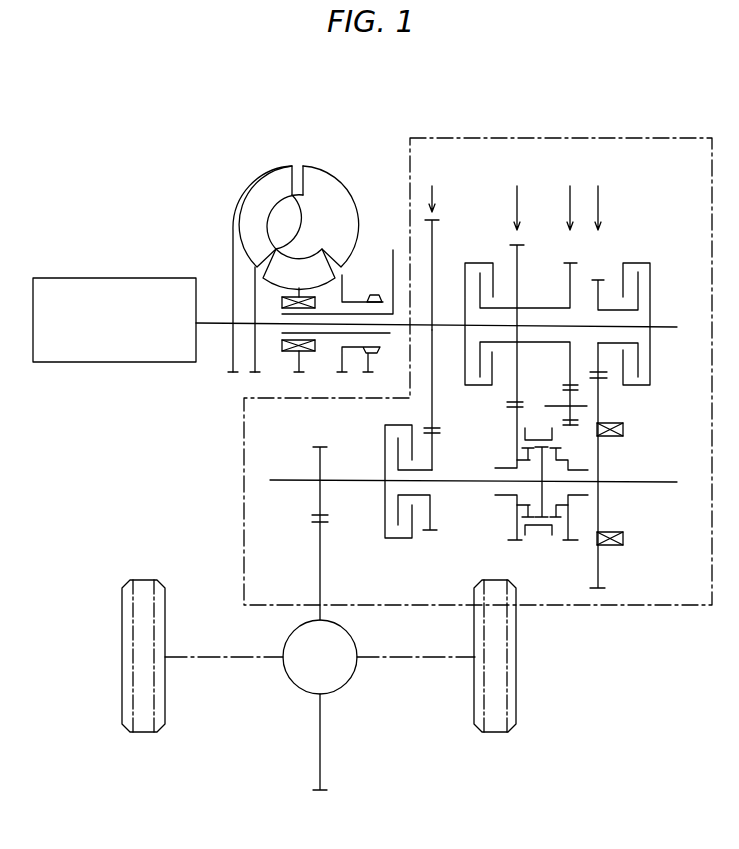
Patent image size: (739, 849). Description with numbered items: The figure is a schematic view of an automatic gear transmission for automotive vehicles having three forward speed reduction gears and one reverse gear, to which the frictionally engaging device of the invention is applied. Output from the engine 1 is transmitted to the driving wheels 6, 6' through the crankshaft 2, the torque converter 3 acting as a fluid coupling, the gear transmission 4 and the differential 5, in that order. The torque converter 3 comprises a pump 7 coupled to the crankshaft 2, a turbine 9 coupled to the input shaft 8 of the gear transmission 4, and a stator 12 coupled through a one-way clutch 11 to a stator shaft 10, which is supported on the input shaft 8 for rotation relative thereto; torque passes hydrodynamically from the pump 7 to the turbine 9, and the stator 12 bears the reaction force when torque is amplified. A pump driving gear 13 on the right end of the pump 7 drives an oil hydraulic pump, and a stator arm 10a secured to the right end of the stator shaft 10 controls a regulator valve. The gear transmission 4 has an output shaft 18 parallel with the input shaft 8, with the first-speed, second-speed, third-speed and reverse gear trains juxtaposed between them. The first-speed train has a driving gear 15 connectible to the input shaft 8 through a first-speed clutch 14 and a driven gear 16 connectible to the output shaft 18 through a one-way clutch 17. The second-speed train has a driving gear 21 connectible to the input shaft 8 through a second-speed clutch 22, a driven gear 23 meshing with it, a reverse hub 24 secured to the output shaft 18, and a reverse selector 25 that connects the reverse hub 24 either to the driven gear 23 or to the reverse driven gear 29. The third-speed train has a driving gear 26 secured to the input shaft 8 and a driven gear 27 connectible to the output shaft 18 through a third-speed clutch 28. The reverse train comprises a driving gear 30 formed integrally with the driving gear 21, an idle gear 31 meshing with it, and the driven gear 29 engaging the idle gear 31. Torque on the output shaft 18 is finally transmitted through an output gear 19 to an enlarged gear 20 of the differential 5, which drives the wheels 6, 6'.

The engine 1 is at (118, 278).
The crankshaft 2 is at (205, 322).
The torque converter 3 is at (324, 178).
The gear transmission 4 is at (456, 138).
The differential 5 is at (288, 677).
The driving wheel 6 is at (143, 689).
The driving wheel 6' is at (495, 690).
The pump 7 is at (346, 212).
The input shaft 8 is at (434, 331).
The turbine 9 is at (258, 208).
The stator shaft 10 is at (382, 335).
The stator arm 10a is at (393, 250).
The one-way clutch 11 is at (279, 352).
The stator 12 is at (344, 284).
The pump driving gear 13 is at (368, 355).
The first-speed clutch 14 is at (651, 278).
The driving gear 15 is at (613, 278).
The driven gear 16 is at (599, 562).
The one-way clutch 17 is at (623, 430).
The output shaft 18 is at (290, 480).
The output gear 19 is at (318, 513).
The enlarged gear 20 is at (320, 576).
The driving gear 21 is at (518, 273).
The second-speed clutch 22 is at (474, 263).
The driven gear 23 is at (517, 449).
The reverse hub 24 is at (540, 488).
The reverse selector 25 is at (541, 536).
The driving gear 26 is at (433, 256).
The driven gear 27 is at (434, 442).
The third-speed clutch 28 is at (385, 451).
The driven gear 29 is at (569, 516).
The driving gear 30 is at (569, 294).
The idle gear 31 is at (563, 396).